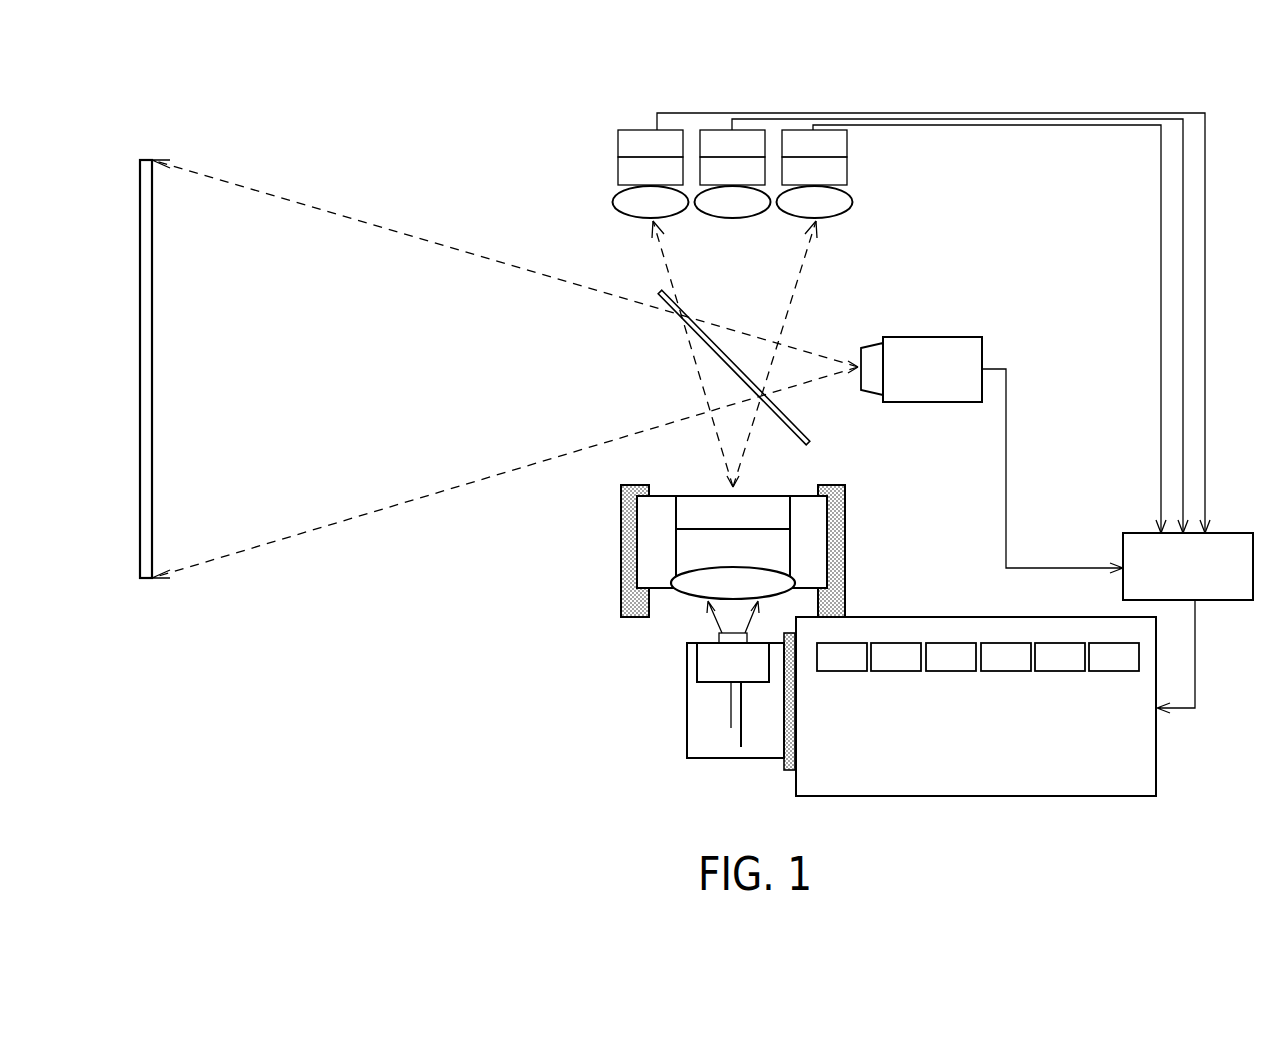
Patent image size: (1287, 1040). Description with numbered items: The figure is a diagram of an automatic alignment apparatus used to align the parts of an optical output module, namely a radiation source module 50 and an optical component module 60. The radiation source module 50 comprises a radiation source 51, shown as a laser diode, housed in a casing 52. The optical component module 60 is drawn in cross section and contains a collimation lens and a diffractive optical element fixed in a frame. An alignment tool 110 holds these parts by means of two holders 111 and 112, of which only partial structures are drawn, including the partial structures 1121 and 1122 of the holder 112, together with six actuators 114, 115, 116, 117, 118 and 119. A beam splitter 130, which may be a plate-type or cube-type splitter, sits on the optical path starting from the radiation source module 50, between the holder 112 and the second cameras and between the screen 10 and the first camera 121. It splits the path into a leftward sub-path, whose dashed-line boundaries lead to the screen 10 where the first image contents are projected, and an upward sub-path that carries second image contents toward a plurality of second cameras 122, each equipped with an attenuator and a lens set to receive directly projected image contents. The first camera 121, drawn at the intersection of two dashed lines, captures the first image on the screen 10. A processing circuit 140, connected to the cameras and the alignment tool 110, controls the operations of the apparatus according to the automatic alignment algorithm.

The screen 10 is at (152, 362).
The radiation source module 50 is at (689, 695).
The radiation source 51 is at (704, 657).
The casing 52 is at (687, 698).
The optical component module 60 is at (675, 539).
The alignment tool 110 is at (976, 681).
The holder 111 is at (787, 775).
The holder 112 is at (660, 566).
The partial structure of the holder 1121 is at (627, 548).
The partial structure of the holder 1122 is at (828, 597).
The actuator 114 is at (845, 671).
The actuator 115 is at (899, 671).
The actuator 116 is at (954, 671).
The actuator 117 is at (1009, 671).
The actuator 118 is at (1063, 671).
The actuator 119 is at (1117, 671).
The first camera 121 is at (945, 337).
The plurality of second cameras 122 is at (843, 73).
The beam splitter 130 is at (715, 338).
The processing circuit 140 is at (1140, 533).